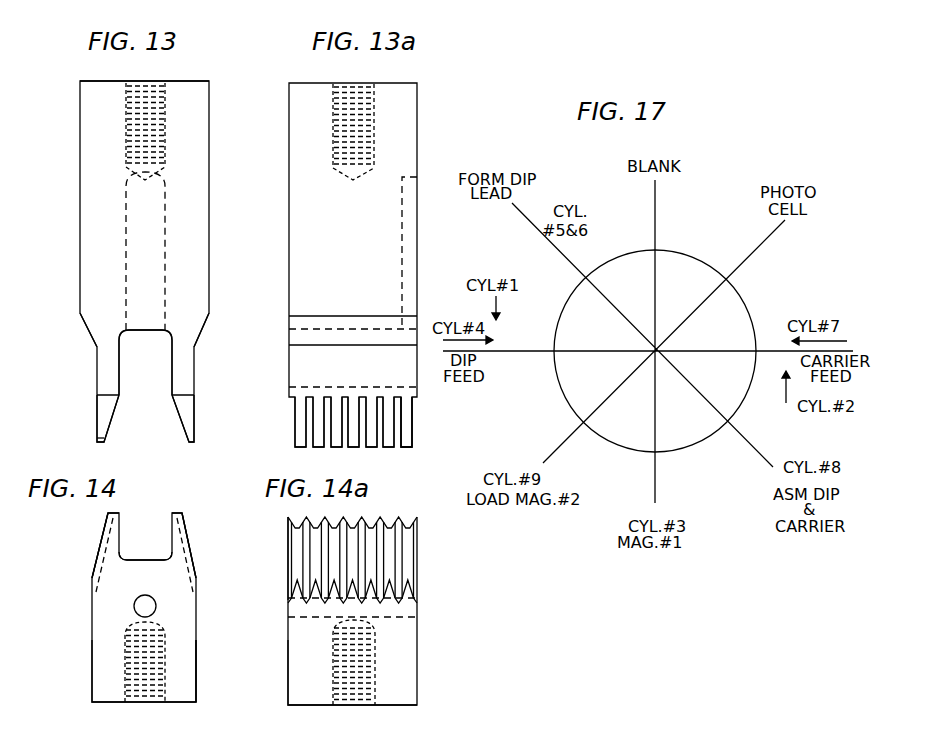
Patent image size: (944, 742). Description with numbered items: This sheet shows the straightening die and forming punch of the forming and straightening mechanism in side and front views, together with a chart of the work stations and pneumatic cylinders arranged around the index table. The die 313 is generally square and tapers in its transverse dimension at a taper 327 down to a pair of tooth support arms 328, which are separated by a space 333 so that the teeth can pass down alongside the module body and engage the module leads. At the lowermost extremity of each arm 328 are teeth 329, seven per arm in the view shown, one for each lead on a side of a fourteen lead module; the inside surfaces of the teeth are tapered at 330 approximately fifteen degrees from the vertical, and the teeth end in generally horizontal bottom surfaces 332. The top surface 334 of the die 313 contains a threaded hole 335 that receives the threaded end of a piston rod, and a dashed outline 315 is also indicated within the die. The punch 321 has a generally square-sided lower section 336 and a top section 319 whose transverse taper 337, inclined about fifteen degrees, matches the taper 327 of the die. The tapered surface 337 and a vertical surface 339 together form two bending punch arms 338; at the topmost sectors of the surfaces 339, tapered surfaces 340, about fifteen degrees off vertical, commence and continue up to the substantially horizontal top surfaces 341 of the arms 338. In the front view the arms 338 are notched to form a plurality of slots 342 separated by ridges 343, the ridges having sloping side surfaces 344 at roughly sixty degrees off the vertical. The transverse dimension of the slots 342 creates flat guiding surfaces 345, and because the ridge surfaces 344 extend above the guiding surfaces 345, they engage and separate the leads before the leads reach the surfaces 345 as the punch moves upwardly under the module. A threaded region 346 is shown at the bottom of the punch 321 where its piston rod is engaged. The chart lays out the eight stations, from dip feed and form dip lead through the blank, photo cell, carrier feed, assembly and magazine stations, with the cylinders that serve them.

In FIG. 13, the die 313 is at (80, 153).
In FIG. 13A, the die 313 is at (417, 120).
In FIG. 13, the slot 315 is at (166, 245).
In FIG. 13A, the slot 315 is at (408, 242).
In FIG. 14, the top section 319 is at (100, 612).
In FIG. 13A, the punch 321 is at (297, 426).
In FIG. 14, the punch 321 is at (92, 682).
In FIG. 14A, the punch 321 is at (417, 658).
In FIG. 13, the taper 327 is at (90, 338).
In FIG. 13, the tooth support arms 328 is at (195, 375).
In FIG. 13A, the tooth support arms 328 is at (417, 378).
In FIG. 13, the teeth 329 is at (97, 423).
In FIG. 13A, the teeth 329 is at (412, 432).
In FIG. 13, the tapered inside surface 330 is at (181, 434).
In FIG. 13, the bottom surface 332 is at (100, 441).
In FIG. 13A, the bottom surface 332 is at (410, 447).
In FIG. 13, the space 333 is at (153, 370).
In FIG. 13, the top surface 334 is at (186, 80).
In FIG. 13, the threaded hole 335 is at (167, 131).
In FIG. 13A, the threaded hole 335 is at (331, 146).
In FIG. 14, the lower section 336 is at (197, 677).
In FIG. 14A, the lower section 336 is at (288, 688).
In FIG. 14, the tapered surface 337 is at (103, 545).
In FIG. 14, the bending punch arms 338 is at (178, 563).
In FIG. 14, the vertical surface 339 is at (168, 543).
In FIG. 14, the tapered surfaces 340 is at (170, 516).
In FIG. 14, the top surfaces 341 is at (108, 511).
In FIG. 14A, the slots 342 is at (388, 522).
In FIG. 14A, the ridges 343 is at (307, 601).
In FIG. 14A, the sloping side surfaces 344 is at (292, 517).
In FIG. 14, the guiding surfaces 345 is at (199, 568).
In FIG. 14A, the guiding surfaces 345 is at (412, 600).
In FIG. 14, the threaded portion 346 is at (125, 688).
In FIG. 14A, the threaded portion 346 is at (376, 690).